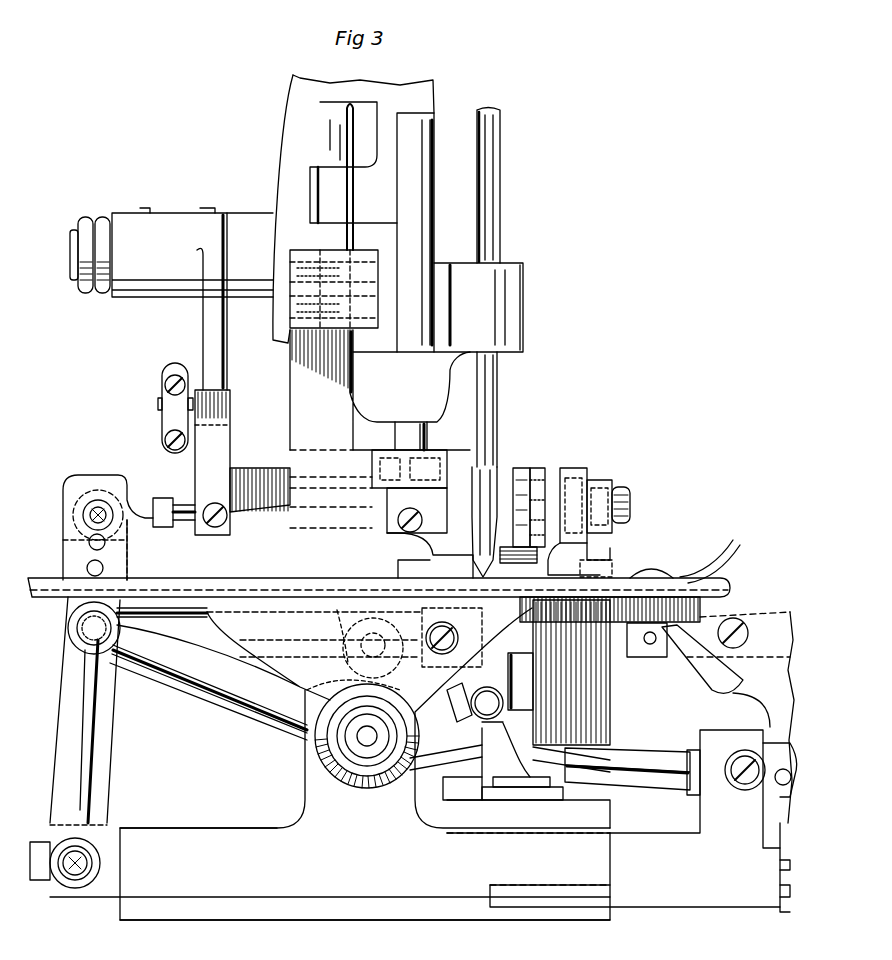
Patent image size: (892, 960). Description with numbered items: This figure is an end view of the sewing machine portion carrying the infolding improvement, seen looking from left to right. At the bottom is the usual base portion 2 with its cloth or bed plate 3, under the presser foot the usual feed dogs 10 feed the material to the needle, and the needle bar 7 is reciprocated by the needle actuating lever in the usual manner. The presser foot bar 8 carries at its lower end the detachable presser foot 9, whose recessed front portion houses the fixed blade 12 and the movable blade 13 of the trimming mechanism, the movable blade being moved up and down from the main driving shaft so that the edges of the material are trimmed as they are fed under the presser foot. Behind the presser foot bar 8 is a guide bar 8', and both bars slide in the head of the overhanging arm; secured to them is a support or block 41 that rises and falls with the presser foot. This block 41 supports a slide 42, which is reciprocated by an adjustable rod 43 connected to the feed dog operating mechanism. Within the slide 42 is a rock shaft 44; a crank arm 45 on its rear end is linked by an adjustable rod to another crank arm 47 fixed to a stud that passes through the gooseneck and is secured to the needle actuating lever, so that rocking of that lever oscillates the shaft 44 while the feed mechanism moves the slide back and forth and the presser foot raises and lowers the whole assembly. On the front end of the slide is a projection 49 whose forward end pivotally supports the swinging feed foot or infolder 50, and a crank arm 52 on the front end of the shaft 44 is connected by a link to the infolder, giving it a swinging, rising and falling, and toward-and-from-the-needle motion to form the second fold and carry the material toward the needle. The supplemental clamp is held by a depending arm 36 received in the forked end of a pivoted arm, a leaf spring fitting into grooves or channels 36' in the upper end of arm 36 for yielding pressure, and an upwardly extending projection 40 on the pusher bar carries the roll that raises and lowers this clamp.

The base portion 2 is at (327, 890).
The cloth or bed plate 3 is at (175, 587).
The needle bar 7 is at (500, 403).
The presser foot bar 8 is at (434, 271).
The guide bar 8' is at (401, 155).
The presser foot 9 is at (400, 572).
The feed dogs 10 is at (625, 627).
The fixed blade 12 is at (680, 587).
The movable blade 13 is at (650, 565).
The depending arm 36 is at (624, 543).
The grooves or channels 36' is at (591, 510).
The upwardly extending projection 40 is at (632, 500).
The support or block 41 is at (300, 292).
The slide 42 is at (272, 515).
The adjustable rod 43 is at (180, 520).
The rock shaft 44 is at (187, 483).
The crank arm 45 is at (220, 440).
The crank arm 47 is at (207, 323).
The projection 49 is at (510, 467).
The swinging feed foot or infolder 50 is at (522, 467).
The crank arm 52 is at (542, 470).